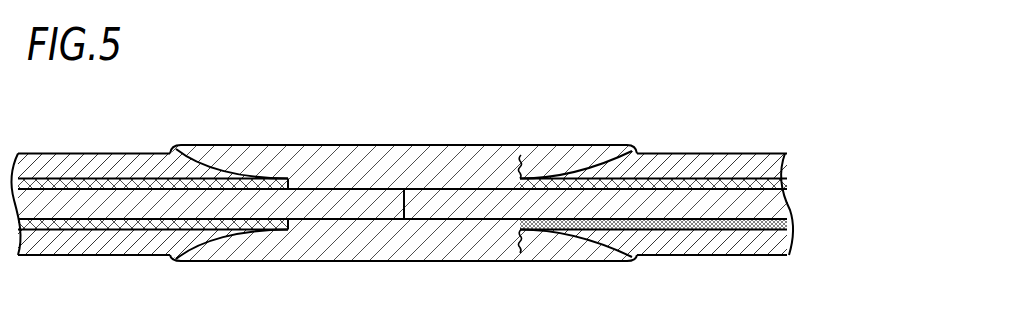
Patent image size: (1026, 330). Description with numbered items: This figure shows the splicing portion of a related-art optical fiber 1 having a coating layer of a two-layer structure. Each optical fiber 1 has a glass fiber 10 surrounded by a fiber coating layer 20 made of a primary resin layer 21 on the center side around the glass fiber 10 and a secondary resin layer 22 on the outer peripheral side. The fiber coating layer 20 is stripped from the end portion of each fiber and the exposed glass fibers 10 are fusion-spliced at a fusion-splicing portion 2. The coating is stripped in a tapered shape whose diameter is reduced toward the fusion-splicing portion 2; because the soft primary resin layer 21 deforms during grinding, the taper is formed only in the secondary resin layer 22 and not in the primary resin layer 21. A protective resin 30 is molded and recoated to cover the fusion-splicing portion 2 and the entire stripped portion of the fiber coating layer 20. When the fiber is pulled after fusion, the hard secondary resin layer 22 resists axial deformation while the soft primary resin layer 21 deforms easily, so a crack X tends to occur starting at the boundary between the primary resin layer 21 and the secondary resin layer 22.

The optical fiber 1 is at (472, 201).
The fusion-splicing portion 2 is at (404, 219).
The glass fiber 10 is at (770, 205).
The fiber coating layer 20 is at (457, 201).
The primary resin layer 21 is at (767, 182).
The secondary resin layer 22 is at (765, 168).
The protective resin 30 is at (417, 160).
The crack X is at (521, 160).